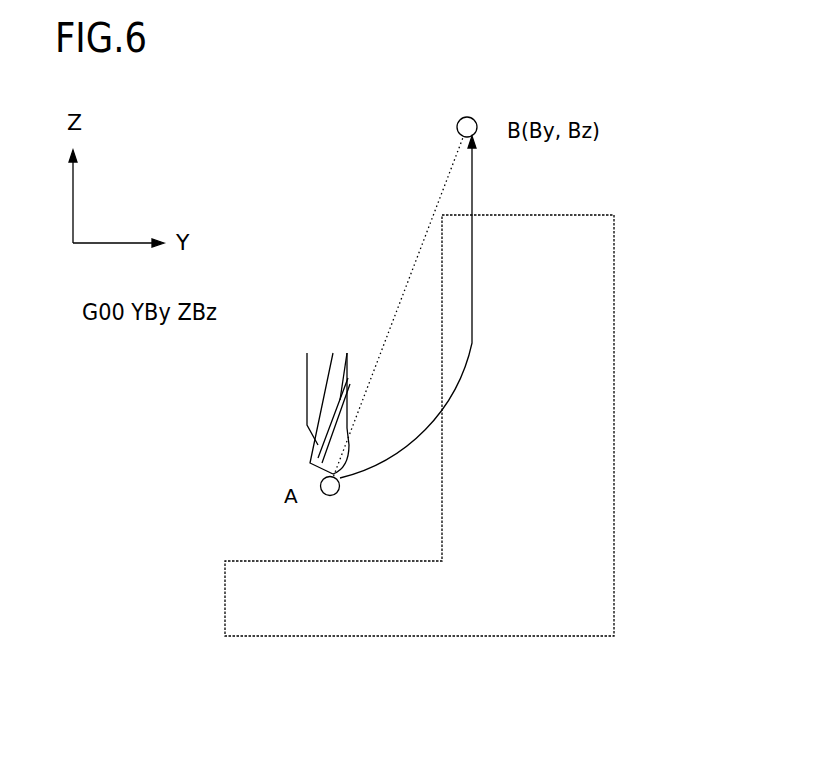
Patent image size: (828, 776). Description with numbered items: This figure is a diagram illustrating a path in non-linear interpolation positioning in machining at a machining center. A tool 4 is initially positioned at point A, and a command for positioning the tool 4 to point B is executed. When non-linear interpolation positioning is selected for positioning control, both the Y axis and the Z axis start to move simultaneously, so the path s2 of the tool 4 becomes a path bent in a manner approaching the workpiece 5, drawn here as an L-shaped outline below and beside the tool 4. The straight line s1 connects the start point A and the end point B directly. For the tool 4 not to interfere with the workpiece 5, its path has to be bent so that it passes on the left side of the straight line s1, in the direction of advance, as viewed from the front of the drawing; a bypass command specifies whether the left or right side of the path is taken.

The tool 4 is at (308, 373).
The workpiece 5 is at (598, 456).
The straight line s1 is at (424, 237).
The path s2 is at (598, 292).